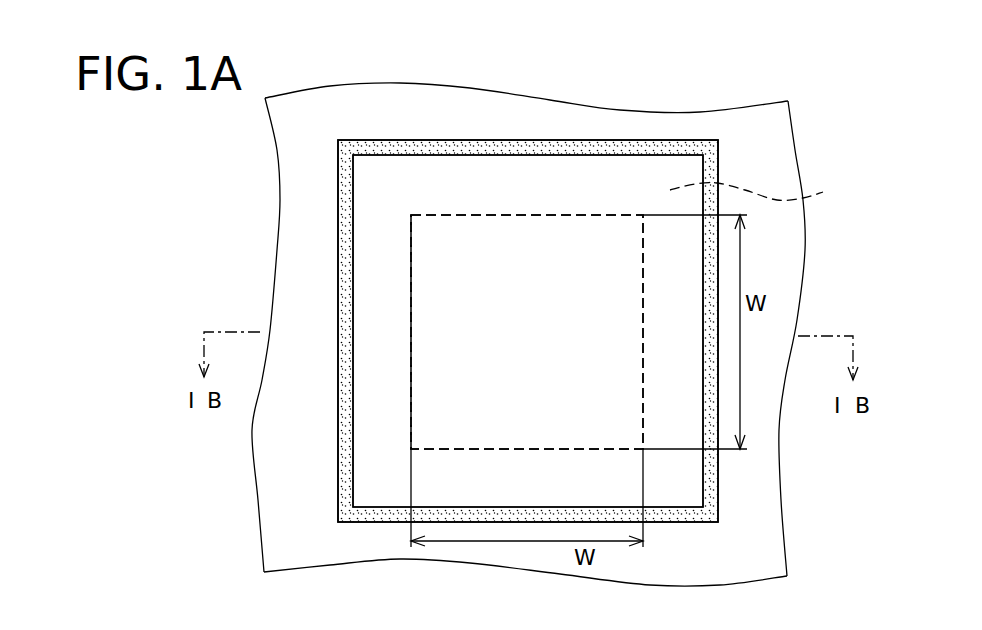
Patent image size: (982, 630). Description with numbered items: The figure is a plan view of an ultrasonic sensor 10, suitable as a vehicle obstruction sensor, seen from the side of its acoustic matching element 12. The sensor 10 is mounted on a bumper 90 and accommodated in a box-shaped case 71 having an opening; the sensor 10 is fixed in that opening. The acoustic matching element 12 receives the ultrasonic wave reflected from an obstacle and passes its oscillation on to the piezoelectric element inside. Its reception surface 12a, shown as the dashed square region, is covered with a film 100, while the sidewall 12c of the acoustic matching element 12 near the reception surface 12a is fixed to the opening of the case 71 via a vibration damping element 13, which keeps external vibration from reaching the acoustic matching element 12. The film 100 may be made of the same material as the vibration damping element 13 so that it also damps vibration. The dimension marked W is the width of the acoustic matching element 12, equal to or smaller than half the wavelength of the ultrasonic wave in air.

The ultrasonic sensor 10 is at (738, 87).
The bumper 90 is at (690, 125).
The film 100 is at (593, 183).
The case 71 is at (340, 207).
The acoustic matching element 12 is at (527, 241).
The reception surface 12a is at (481, 257).
The sidewall 12c is at (411, 258).
The vibration damping element 13 is at (761, 189).